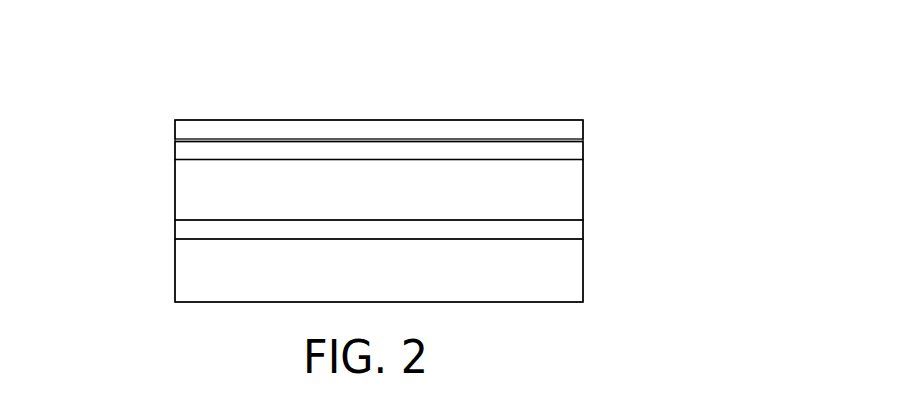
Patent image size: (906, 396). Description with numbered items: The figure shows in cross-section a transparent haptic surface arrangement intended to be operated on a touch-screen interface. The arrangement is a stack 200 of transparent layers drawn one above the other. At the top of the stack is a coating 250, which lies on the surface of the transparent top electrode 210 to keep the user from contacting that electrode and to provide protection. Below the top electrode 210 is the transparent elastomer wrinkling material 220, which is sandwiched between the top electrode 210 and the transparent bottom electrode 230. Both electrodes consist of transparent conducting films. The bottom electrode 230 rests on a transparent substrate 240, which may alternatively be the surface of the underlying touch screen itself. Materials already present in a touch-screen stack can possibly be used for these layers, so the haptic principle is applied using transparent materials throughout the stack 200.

The stack 200 is at (72, 89).
The transparent top electrode 210 is at (597, 150).
The transparent elastomer wrinkling material 220 is at (556, 204).
The transparent bottom electrode 230 is at (597, 227).
The transparent substrate 240 is at (556, 285).
The coating 250 is at (532, 117).